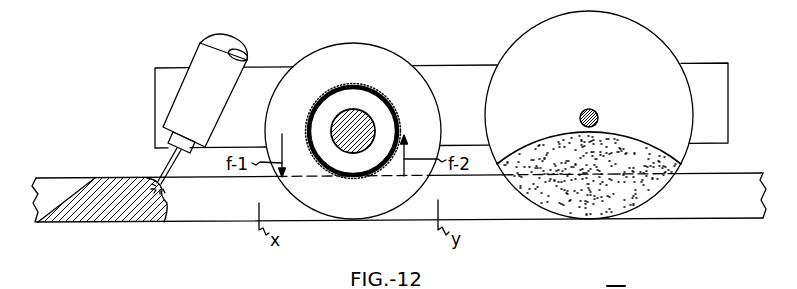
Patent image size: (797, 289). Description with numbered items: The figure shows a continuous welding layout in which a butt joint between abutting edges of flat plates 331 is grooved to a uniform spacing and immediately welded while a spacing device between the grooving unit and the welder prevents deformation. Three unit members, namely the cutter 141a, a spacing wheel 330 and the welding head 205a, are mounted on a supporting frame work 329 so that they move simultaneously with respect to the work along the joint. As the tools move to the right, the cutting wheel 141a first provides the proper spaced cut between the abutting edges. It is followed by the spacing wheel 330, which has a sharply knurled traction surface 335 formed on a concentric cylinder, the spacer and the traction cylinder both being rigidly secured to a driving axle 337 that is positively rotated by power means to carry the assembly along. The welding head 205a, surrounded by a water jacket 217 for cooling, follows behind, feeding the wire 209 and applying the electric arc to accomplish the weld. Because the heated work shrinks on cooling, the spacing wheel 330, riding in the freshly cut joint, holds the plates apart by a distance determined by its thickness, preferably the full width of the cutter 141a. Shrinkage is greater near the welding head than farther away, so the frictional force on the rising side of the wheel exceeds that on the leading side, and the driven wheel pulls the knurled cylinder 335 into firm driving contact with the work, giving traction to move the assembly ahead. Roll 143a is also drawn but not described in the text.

The welding head 205a is at (177, 95).
The water jacket 217 is at (211, 48).
The wire 209 is at (167, 160).
The supporting frame work 329 is at (441, 77).
The spacing wheel 330 is at (361, 57).
The knurled traction surface 335 is at (325, 97).
The driving axle 337 is at (370, 117).
The roll 143a is at (652, 50).
The cutter 141a is at (543, 153).
The plates 331 is at (673, 217).